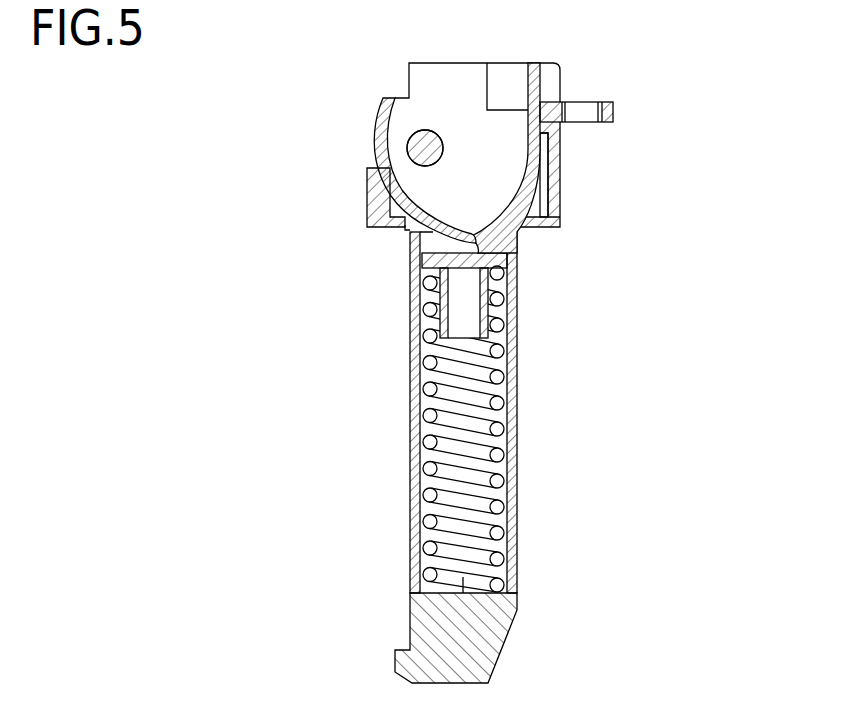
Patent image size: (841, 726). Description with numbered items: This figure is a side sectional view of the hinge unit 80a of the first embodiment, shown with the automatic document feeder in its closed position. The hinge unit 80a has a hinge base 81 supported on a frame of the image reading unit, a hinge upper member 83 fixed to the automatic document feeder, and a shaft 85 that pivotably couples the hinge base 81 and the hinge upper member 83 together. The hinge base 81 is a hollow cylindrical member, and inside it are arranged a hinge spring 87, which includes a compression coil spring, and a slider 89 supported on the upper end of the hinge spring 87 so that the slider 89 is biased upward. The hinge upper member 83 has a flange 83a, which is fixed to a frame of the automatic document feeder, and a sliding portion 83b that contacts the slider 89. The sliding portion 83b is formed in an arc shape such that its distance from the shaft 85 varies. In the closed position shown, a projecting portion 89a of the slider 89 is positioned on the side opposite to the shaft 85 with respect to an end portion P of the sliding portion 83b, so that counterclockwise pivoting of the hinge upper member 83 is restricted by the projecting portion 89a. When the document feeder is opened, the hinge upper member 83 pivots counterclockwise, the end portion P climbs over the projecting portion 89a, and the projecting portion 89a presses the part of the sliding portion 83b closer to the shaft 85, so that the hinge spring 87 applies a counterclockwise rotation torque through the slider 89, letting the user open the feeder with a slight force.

The hinge unit 80a is at (683, 250).
The hinge base 81 is at (518, 525).
The hinge upper member 83 is at (562, 88).
The flange 83a is at (613, 112).
The sliding portion 83b is at (392, 196).
The shaft 85 is at (410, 136).
The hinge spring 87 is at (433, 440).
The slider 89 is at (503, 280).
The projecting portion 89a is at (515, 232).
The end portion P is at (475, 233).